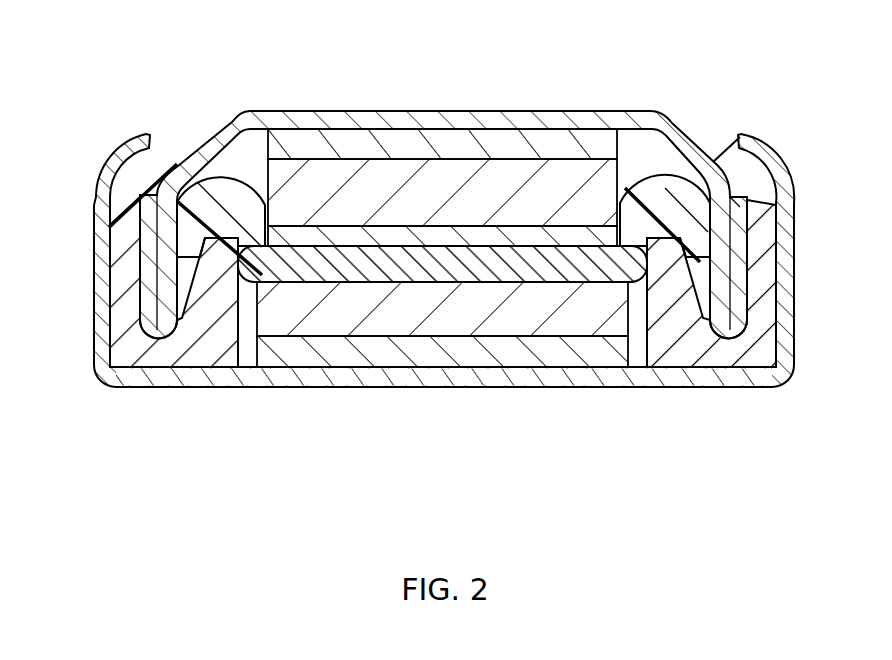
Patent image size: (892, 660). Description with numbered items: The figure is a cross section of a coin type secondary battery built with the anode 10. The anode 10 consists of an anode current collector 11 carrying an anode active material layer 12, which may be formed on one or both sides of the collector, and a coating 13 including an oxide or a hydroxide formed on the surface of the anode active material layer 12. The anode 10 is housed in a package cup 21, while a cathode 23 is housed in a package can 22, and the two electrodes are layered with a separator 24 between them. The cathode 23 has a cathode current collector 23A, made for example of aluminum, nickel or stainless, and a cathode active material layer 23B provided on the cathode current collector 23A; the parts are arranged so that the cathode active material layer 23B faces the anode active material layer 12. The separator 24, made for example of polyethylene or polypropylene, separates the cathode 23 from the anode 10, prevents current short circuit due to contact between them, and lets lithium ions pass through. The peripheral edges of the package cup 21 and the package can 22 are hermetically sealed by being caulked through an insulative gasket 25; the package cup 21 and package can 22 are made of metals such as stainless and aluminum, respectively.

The anode 10 is at (461, 126).
The anode current collector 11 is at (376, 150).
The anode active material layer 12 is at (493, 185).
The coating 13 is at (335, 55).
The package cup 21 is at (261, 114).
The package can 22 is at (313, 375).
The cathode 23 is at (442, 394).
The cathode current collector 23A is at (597, 457).
The cathode active material layer 23B is at (563, 327).
The separator 24 is at (667, 190).
The insulative gasket 25 is at (200, 357).